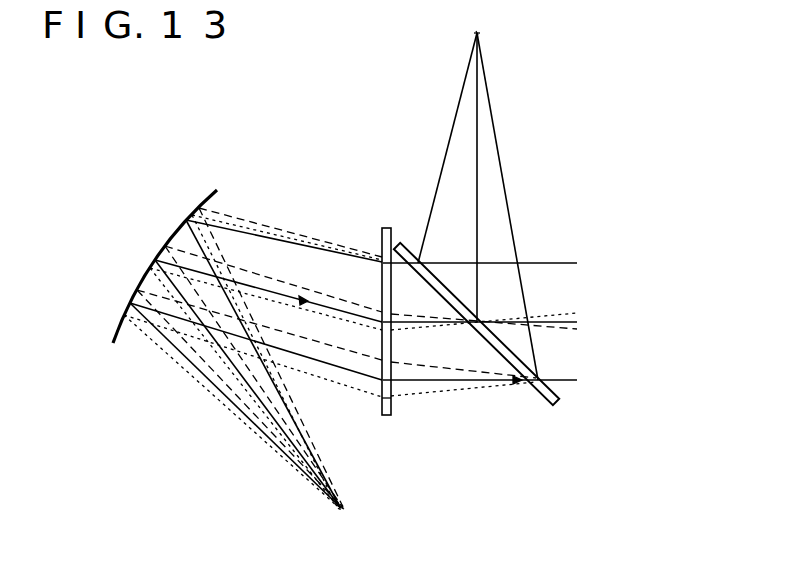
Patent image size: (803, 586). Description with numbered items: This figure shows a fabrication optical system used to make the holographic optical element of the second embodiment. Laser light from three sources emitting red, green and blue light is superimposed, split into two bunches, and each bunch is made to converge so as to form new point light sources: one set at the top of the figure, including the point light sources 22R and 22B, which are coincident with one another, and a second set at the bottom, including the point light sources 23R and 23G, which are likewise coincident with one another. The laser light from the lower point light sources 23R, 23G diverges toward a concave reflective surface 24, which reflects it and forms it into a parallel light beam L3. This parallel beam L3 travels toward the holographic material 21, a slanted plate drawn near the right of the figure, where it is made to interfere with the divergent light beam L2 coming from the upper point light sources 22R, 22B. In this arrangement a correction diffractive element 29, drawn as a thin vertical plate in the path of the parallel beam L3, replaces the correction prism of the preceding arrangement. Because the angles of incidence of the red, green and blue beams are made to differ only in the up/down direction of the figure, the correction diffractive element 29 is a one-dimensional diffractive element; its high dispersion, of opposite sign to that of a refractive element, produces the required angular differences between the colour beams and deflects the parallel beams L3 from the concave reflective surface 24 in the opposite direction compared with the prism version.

The concave reflective surface 24 is at (200, 204).
The correction diffractive element 29 is at (380, 245).
The holographic material 21 is at (546, 398).
The point light source 22R is at (485, 33).
The point light source 22B is at (477, 33).
The point light source 23R is at (343, 508).
The point light source 23G is at (340, 507).
The divergent light beam L2 is at (498, 183).
The parallel light beam L3 is at (277, 246).